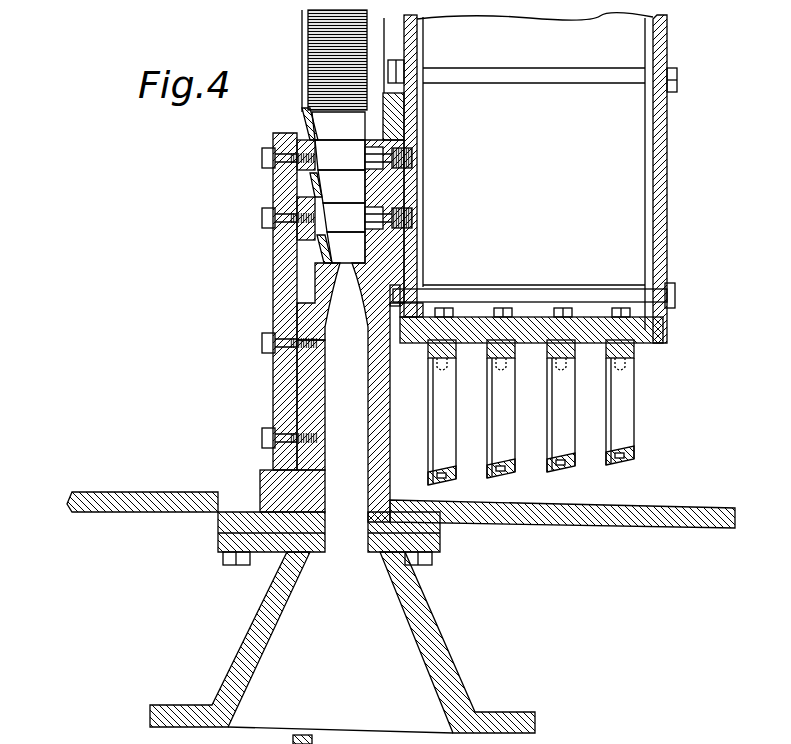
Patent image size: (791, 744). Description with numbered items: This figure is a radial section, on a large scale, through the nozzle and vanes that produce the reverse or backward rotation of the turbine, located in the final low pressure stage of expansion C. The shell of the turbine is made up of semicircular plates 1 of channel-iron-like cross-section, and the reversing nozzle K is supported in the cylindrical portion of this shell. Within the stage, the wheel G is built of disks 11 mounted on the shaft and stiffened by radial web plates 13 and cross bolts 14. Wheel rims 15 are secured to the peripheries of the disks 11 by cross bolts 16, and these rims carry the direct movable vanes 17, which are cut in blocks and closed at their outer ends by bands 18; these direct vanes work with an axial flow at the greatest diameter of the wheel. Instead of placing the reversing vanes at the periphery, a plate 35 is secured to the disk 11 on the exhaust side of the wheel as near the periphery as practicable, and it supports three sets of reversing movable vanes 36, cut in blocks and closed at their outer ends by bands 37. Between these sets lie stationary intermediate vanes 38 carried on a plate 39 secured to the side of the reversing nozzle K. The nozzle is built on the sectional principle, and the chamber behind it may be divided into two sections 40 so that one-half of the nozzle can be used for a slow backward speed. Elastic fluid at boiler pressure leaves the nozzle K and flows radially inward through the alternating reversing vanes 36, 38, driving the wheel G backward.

The semicircular plates 1 is at (401, 528).
The disks 11 is at (412, 33).
The radial web plates 13 is at (535, 149).
The cross bolts 14 is at (589, 62).
The wheel rims 15 is at (665, 333).
The cross bolts 16 is at (583, 296).
The movable vanes 17 is at (630, 397).
The bands 18 is at (630, 462).
The plate 35 is at (404, 113).
The movable vanes 36 is at (338, 187).
The bands 37 is at (302, 116).
The stationary intermediate vanes 38 is at (340, 186).
The plate 39 is at (278, 282).
The sections 40 is at (320, 437).
The third stage of expansion C is at (690, 205).
The wheel G is at (562, 222).
The reversing nozzle K is at (228, 383).